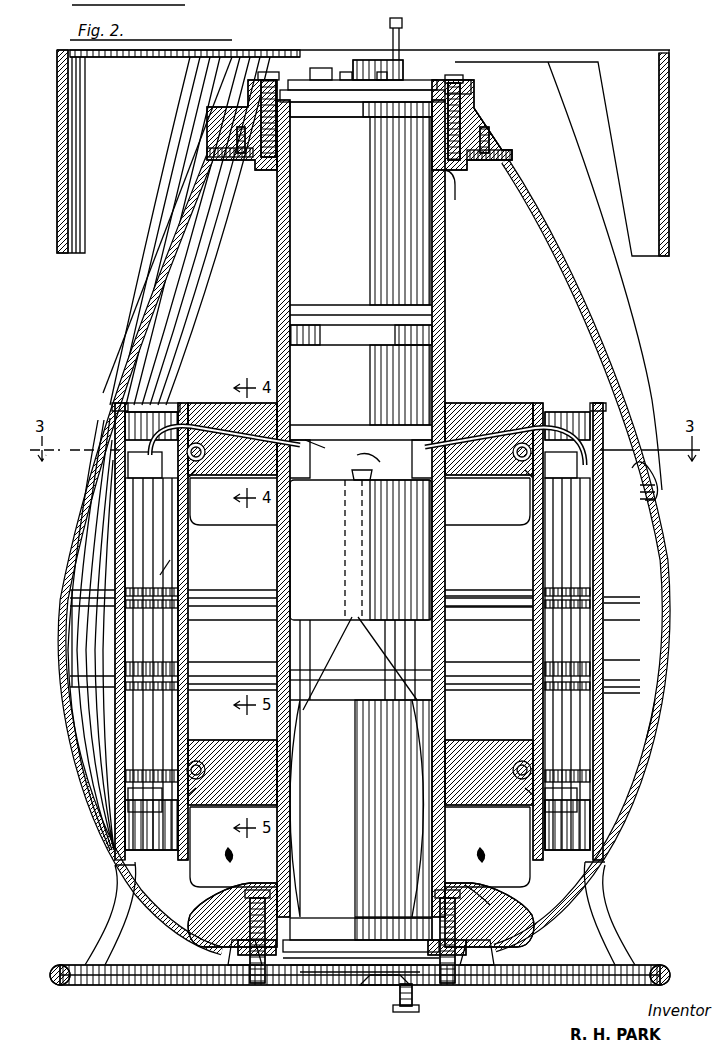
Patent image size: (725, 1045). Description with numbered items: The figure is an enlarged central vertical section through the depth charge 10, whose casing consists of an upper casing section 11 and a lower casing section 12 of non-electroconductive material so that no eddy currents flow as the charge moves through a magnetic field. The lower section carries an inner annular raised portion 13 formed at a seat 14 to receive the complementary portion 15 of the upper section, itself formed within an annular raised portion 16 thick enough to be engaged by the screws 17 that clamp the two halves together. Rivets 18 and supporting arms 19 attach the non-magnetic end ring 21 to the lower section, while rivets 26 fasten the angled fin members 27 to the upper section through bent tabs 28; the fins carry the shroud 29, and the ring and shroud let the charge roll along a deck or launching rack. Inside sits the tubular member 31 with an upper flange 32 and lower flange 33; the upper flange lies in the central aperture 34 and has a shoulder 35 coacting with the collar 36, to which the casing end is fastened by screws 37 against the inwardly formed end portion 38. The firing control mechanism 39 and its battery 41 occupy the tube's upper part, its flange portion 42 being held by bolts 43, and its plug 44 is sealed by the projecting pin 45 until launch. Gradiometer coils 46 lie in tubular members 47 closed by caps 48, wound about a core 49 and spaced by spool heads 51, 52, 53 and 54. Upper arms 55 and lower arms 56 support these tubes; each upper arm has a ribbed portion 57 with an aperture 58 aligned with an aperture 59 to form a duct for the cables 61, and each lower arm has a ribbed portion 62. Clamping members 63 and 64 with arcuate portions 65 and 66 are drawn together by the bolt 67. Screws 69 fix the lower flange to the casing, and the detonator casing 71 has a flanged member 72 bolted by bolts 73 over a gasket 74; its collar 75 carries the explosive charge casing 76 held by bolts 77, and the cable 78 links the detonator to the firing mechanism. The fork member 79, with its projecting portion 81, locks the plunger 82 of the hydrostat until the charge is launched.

The depth charge 10 is at (655, 540).
The upper casing section 11 is at (95, 430).
The lower casing section 12 is at (72, 778).
The inner annular raised portion 13 is at (620, 682).
The formed seat 14 is at (660, 662).
The complementary portion 15 is at (640, 632).
The annular raised portion 16 is at (489, 623).
The screws 17 is at (58, 640).
The rivets 18 is at (125, 848).
The supporting arms 19 is at (128, 913).
The end ring 21 is at (170, 988).
The rivets 26 is at (656, 480).
The fin members 27 is at (105, 312).
The tabs 28 is at (655, 492).
The shroud 29 is at (56, 175).
The tubular member 31 is at (446, 255).
The upper flange 32 is at (452, 180).
The lower flange 33 is at (485, 892).
The central aperture 34 is at (256, 168).
The shoulder 35 is at (490, 105).
The collar 36 is at (508, 125).
The screws 37 is at (235, 140).
The inwardly formed end portion 38 is at (512, 155).
The firing control mechanism 39 is at (361, 498).
The battery 41 is at (361, 377).
The flange portion 42 is at (478, 95).
The bolts 43 is at (276, 72).
The plug 44 is at (385, 50).
The projecting pin 45 is at (402, 28).
The gradiometer coils 46 is at (188, 576).
The tubular members 47 is at (182, 558).
The caps 48 is at (160, 412).
The core 49 is at (185, 480).
The spool head 51 is at (158, 520).
The spool head 52 is at (150, 592).
The spool head 53 is at (145, 648).
The spool head 54 is at (150, 770).
The upper arms 55 is at (222, 403).
The lower arms 56 is at (194, 740).
The ribbed portion 57 is at (290, 420).
The aperture 58 is at (215, 410).
The aperture 59 is at (165, 405).
The cables 61 is at (312, 435).
The ribbed portion 62 is at (214, 808).
The clamping member 63 is at (190, 480).
The clamping member 64 is at (526, 478).
The arcuate portion 65 is at (175, 458).
The arcuate portion 66 is at (561, 632).
The bolt 67 is at (218, 480).
The screws 69 is at (195, 935).
The detonator casing 71 is at (361, 808).
The flanged member 72 is at (334, 940).
The bolts 73 is at (248, 978).
The gasket 74 is at (270, 975).
The collar 75 is at (320, 676).
The explosive charge casing 76 is at (361, 550).
The bolts 77 is at (312, 680).
The cable 78 is at (380, 462).
The fork member 79 is at (385, 990).
The projecting portion 81 is at (398, 1018).
The plunger 82 is at (405, 980).